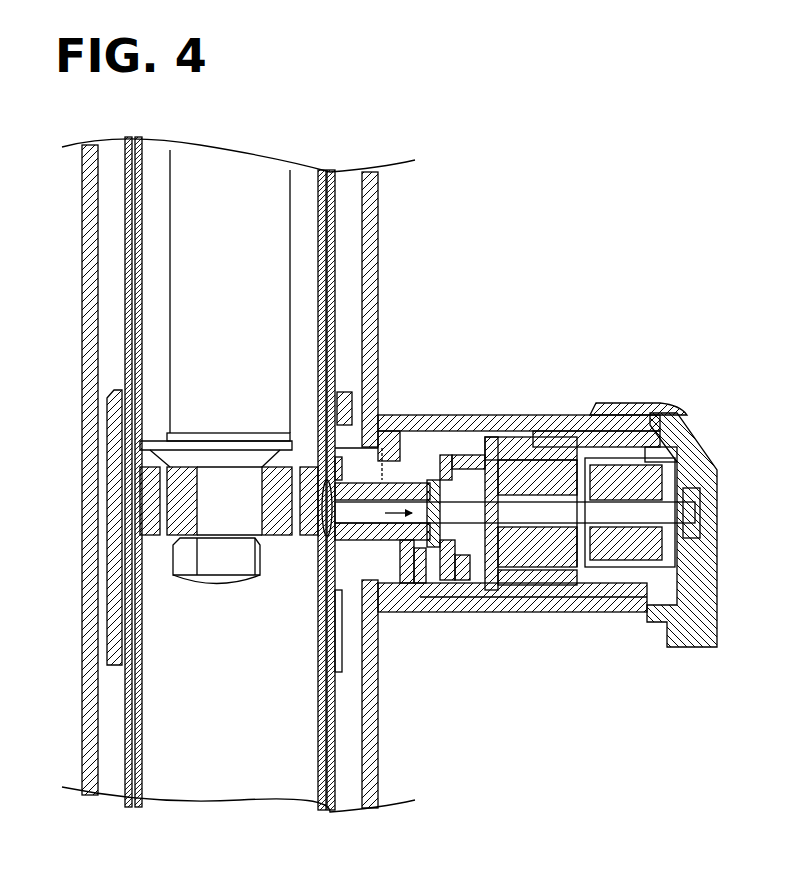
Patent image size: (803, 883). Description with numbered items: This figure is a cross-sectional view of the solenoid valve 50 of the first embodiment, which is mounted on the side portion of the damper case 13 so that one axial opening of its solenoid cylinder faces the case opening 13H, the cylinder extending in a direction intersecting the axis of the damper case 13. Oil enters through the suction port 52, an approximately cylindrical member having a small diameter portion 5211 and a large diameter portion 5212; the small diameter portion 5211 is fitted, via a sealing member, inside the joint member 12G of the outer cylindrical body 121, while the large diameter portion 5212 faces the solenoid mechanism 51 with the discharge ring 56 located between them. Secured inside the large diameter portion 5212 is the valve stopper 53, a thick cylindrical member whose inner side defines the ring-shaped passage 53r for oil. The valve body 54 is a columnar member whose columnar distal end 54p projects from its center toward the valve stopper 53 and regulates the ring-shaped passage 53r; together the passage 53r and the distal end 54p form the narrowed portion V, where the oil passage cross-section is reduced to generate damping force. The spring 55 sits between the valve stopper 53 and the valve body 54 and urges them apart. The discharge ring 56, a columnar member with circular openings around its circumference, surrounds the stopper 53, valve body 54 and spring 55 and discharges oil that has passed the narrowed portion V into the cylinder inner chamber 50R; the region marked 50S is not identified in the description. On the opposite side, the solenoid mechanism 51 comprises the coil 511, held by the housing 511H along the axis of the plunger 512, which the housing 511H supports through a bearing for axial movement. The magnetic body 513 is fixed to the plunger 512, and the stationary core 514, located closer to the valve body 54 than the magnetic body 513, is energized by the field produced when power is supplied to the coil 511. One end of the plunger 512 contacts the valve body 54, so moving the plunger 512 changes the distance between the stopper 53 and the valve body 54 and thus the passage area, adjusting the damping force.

The joint member 12G is at (348, 596).
The damper case 13 is at (378, 253).
The outer cylindrical body 121 is at (335, 223).
The case opening 13H is at (355, 600).
The narrowed portion V is at (322, 572).
The solenoid valve 50 is at (630, 392).
The sleeve 50S is at (545, 440).
The cylinder inner chamber 50R is at (470, 478).
The valve stopper 53 is at (435, 500).
The ring-shaped passage 53r is at (455, 490).
The distal end 54p is at (500, 470).
The valve body 54 is at (490, 560).
The spring 55 is at (448, 580).
The discharge ring 56 is at (462, 580).
The stationary core 514 is at (552, 525).
The plunger 512 is at (605, 570).
The magnetic body 513 is at (630, 620).
The coil 511 is at (500, 612).
The housing 511H is at (705, 415).
The solenoid mechanism 51 is at (695, 660).
The suction port 52 is at (430, 661).
The small diameter portion 5211 is at (390, 612).
The large diameter portion 5212 is at (408, 612).